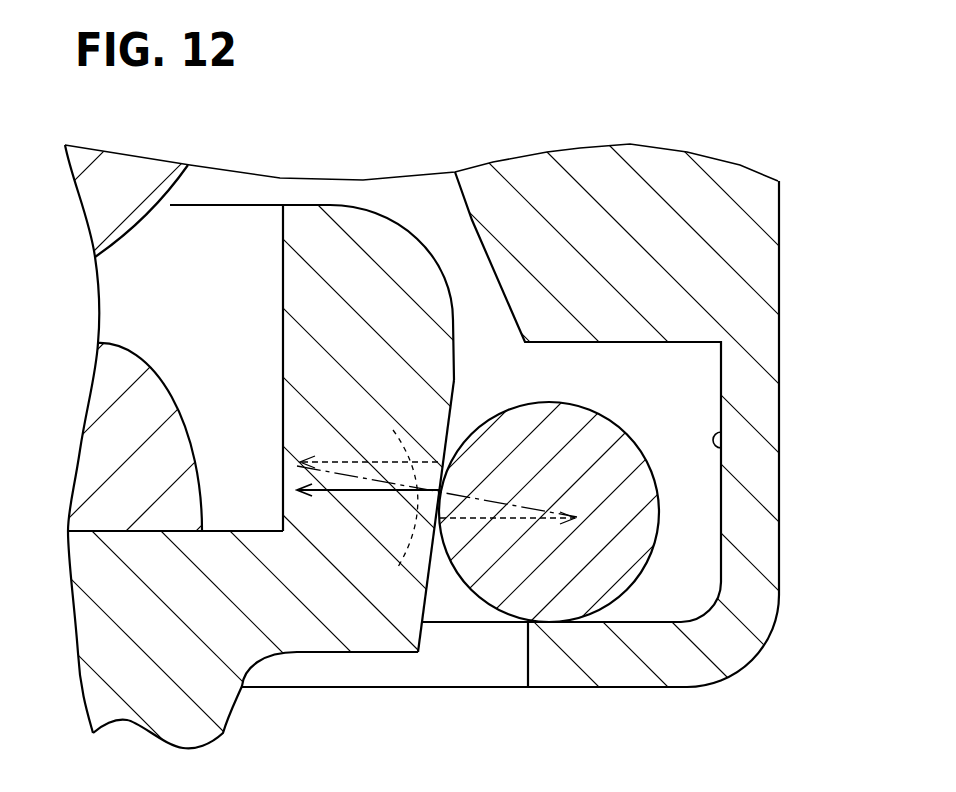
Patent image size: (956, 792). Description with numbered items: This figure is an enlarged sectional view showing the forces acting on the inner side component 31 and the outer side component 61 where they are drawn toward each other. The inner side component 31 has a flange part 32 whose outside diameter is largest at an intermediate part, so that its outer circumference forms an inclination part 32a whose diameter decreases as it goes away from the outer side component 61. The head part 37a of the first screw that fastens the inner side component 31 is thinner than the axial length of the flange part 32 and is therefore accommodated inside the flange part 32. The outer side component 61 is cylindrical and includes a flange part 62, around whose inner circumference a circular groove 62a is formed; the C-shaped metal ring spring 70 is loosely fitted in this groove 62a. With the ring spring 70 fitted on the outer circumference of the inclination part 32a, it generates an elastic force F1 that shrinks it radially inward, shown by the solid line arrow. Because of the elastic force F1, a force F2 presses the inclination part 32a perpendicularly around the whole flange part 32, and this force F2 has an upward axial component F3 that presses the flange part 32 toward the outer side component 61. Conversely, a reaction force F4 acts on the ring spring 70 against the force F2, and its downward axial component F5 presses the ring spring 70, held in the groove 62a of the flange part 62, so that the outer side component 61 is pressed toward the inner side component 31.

The inner side component 31 is at (259, 733).
The flange part 32 is at (278, 212).
The inclination part 32a is at (424, 610).
The head part 37a is at (112, 345).
The outer side component 61 is at (797, 223).
The flange part 62 is at (780, 288).
The groove 62a is at (722, 432).
The ring spring 70 is at (652, 526).
The elastic force F1 is at (358, 494).
The force F2 is at (368, 452).
The axial component F3 is at (437, 485).
The reaction force F4 is at (502, 498).
The axial component F5 is at (428, 592).